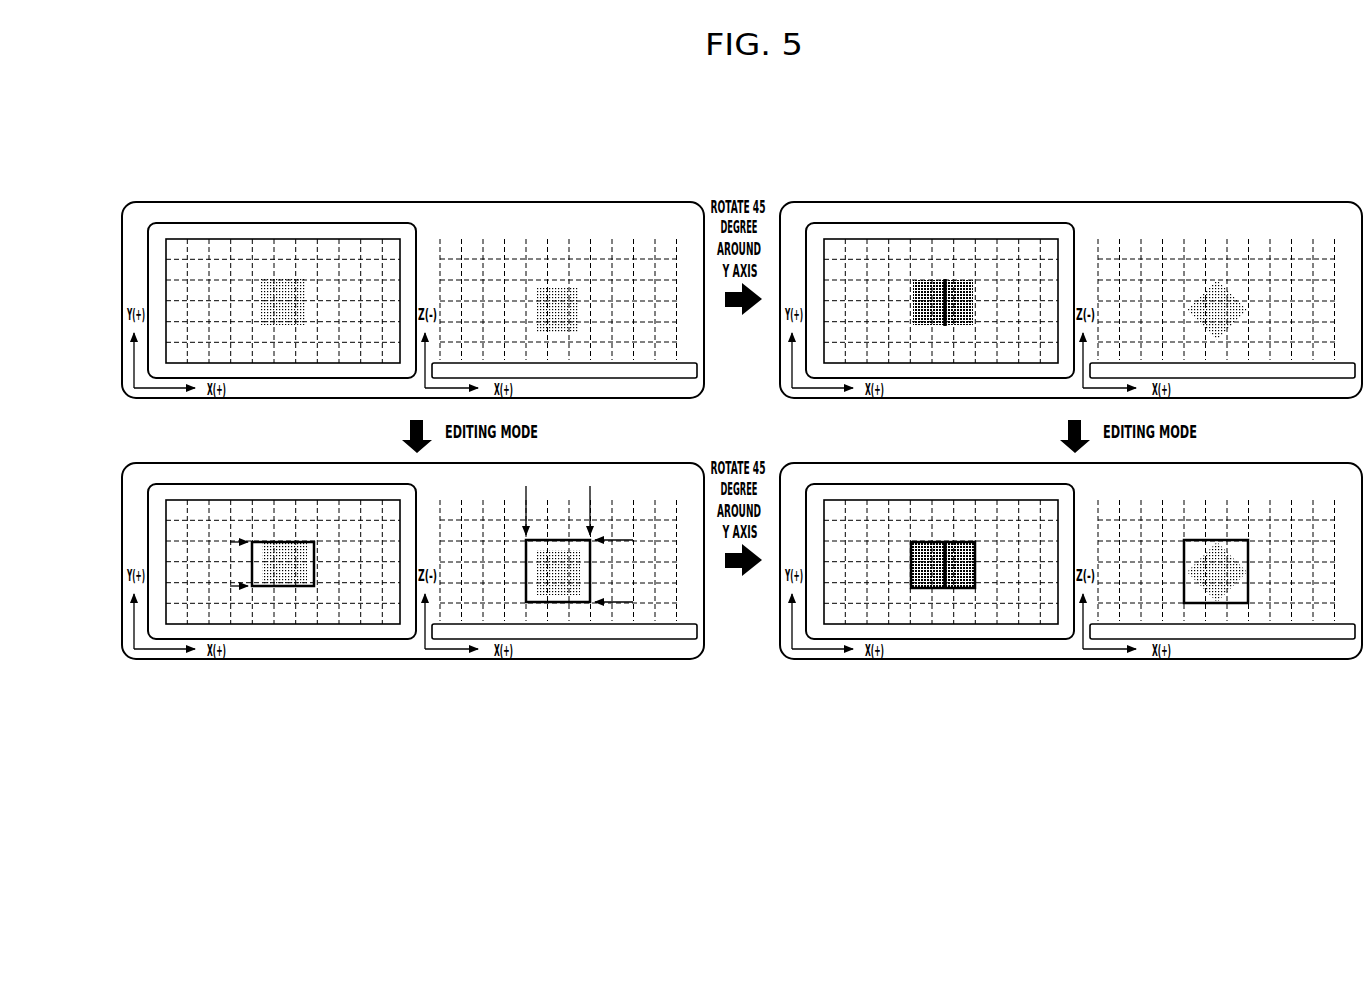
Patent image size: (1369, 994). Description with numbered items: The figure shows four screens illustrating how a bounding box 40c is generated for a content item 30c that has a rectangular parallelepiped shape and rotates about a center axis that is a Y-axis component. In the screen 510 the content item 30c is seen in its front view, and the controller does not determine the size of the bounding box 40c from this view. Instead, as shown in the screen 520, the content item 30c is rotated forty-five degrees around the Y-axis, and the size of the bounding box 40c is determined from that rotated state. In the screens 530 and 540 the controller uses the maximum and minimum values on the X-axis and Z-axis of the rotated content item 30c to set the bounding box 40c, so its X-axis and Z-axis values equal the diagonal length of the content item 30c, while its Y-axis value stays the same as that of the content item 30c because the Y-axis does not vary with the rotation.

The screen 510 is at (413, 274).
The screen 520 is at (1211, 200).
The screen 530 is at (413, 556).
The screen 540 is at (1211, 461).
The content item 30c is at (283, 278).
The bounding box 40c is at (283, 588).